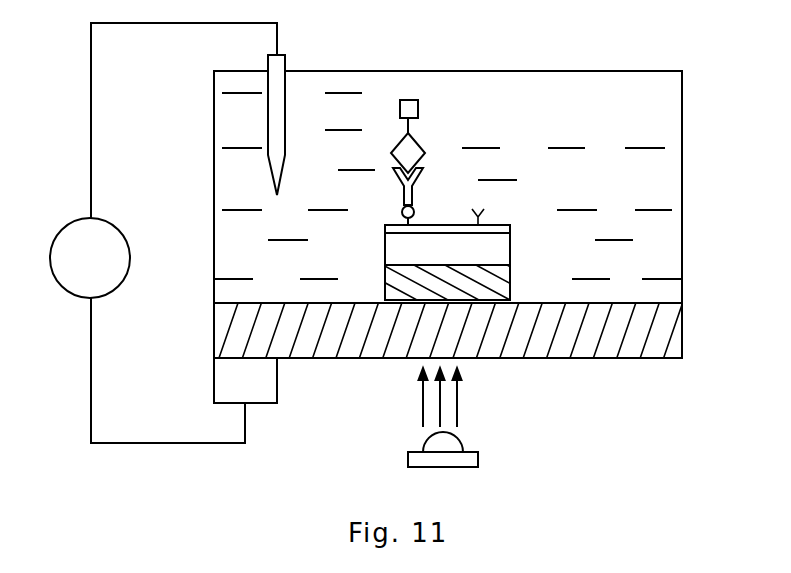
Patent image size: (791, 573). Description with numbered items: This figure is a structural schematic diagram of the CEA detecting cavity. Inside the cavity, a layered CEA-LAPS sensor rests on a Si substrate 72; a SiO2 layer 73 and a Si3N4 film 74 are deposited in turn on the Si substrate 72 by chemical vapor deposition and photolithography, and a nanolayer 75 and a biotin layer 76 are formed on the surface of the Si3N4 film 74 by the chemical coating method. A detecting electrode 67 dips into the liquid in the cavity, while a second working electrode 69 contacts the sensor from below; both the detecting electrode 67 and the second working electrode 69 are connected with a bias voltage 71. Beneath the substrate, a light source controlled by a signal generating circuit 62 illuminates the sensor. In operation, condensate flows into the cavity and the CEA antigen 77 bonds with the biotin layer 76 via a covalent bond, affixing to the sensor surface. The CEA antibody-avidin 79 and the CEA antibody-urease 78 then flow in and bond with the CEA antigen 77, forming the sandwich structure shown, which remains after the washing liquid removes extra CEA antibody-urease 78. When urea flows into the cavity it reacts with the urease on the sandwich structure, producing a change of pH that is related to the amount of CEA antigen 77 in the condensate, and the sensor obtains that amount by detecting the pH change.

The light source controlled by a signal generating circuit 62 is at (464, 424).
The detecting electrode 67 is at (297, 111).
The second working electrode 69 is at (220, 382).
The bias voltage 71 is at (65, 258).
The Si substrate 72 is at (476, 330).
The SiO2 layer 73 is at (468, 286).
The Si3N4 film 74 is at (471, 254).
The nanolayer 75 is at (471, 230).
The biotin layer 76 is at (515, 205).
The CEA antigen 77 is at (432, 142).
The CEA antibody-urease 78 is at (423, 112).
The CEA antibody-avidin 79 is at (432, 188).